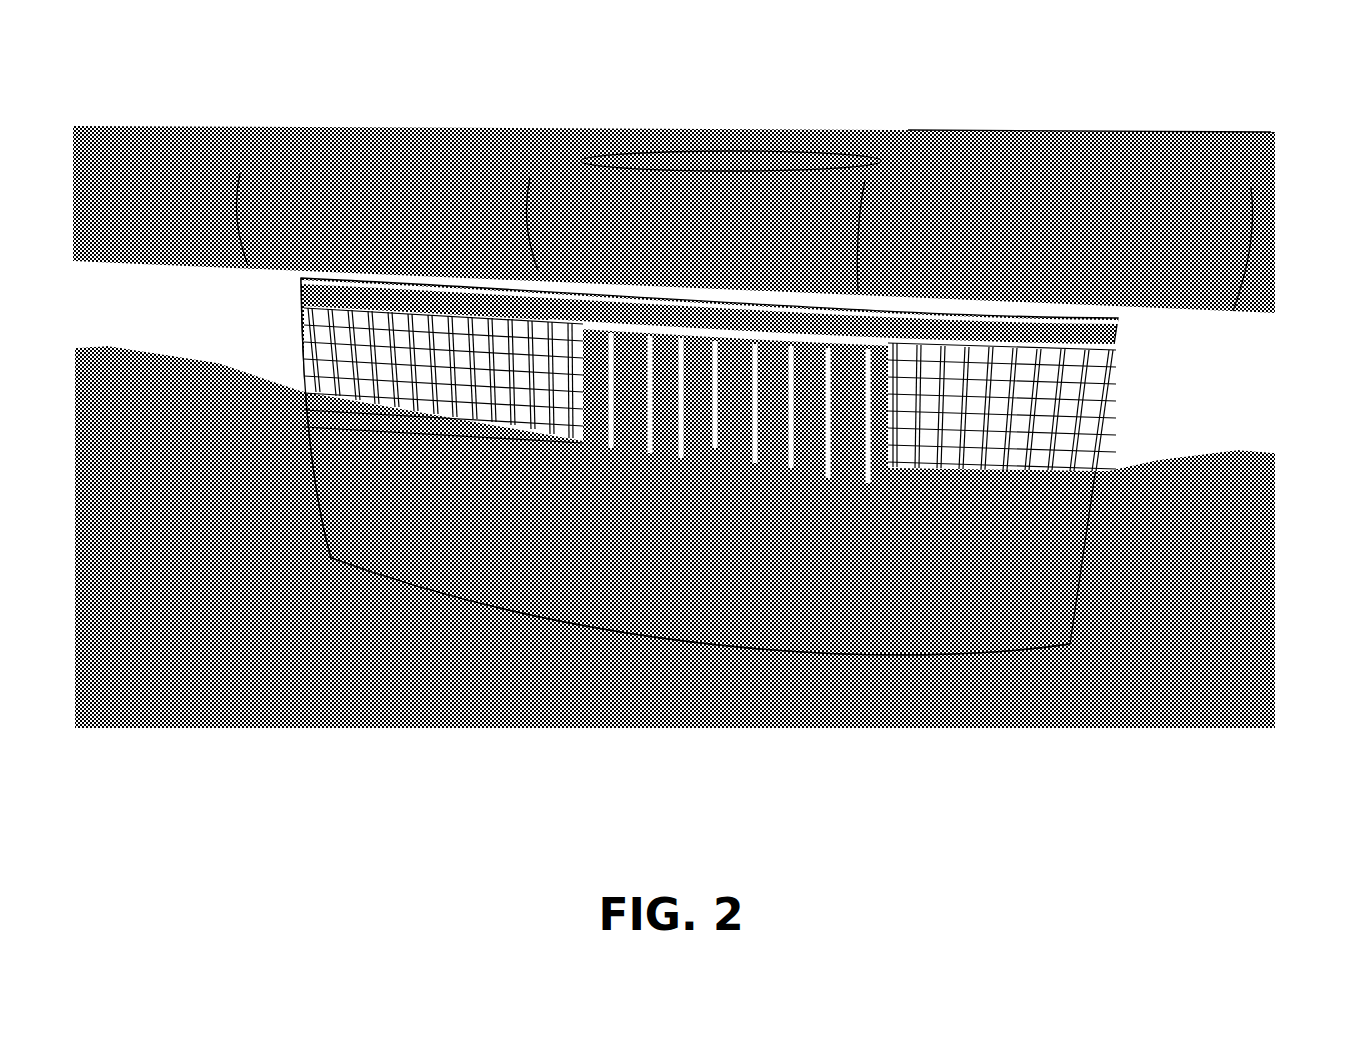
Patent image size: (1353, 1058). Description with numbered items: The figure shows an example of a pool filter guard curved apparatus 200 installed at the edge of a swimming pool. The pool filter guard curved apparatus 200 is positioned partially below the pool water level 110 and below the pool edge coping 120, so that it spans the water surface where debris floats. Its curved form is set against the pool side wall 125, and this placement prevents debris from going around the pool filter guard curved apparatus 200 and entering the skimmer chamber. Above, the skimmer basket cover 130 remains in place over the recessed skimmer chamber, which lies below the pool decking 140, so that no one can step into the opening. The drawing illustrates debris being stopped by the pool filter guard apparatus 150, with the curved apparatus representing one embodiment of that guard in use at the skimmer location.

The pool water level 110 is at (1232, 565).
The pool edge coping 120 is at (1248, 208).
The pool side wall 125 is at (1243, 358).
The skimmer basket cover 130 is at (703, 152).
The pool decking 140 is at (1090, 138).
The pool filter guard apparatus 150 is at (305, 410).
The pool filter guard curved apparatus 200 is at (1103, 377).